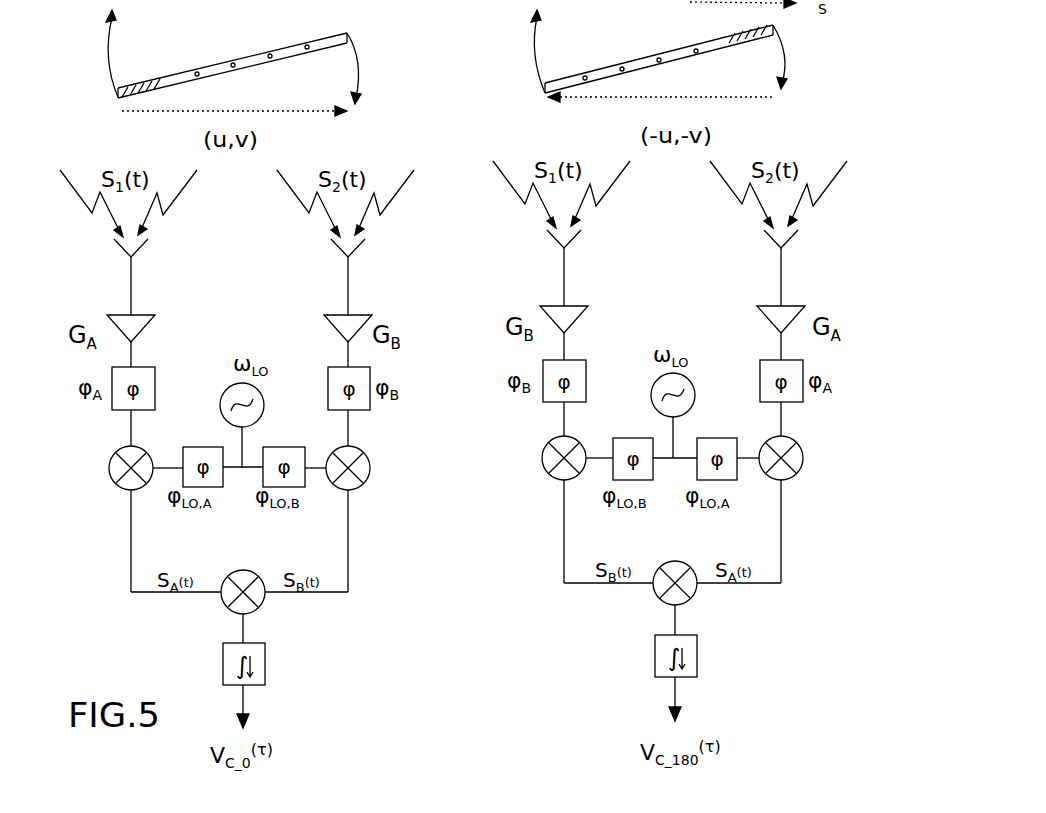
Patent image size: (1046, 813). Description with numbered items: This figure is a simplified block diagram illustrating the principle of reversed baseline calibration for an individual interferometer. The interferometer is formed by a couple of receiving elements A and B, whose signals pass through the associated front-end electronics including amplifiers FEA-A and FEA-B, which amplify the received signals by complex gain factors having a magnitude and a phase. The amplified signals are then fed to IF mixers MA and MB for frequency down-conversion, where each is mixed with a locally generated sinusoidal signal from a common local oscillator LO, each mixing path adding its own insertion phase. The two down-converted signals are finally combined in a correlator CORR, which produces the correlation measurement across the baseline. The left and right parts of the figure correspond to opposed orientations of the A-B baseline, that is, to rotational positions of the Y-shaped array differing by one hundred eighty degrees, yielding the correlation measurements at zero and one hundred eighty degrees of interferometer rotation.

The receiving element A is at (140, 243).
The receiving element B is at (336, 243).
The front-end amplifier FEA-A is at (193, 318).
The front-end amplifier FEA-B is at (326, 326).
The local oscillator LO is at (226, 393).
The IF mixer MA is at (167, 437).
The IF mixer MB is at (328, 456).
The correlator CORR is at (262, 606).